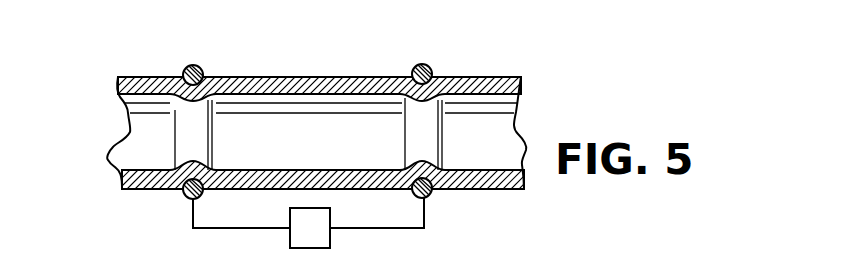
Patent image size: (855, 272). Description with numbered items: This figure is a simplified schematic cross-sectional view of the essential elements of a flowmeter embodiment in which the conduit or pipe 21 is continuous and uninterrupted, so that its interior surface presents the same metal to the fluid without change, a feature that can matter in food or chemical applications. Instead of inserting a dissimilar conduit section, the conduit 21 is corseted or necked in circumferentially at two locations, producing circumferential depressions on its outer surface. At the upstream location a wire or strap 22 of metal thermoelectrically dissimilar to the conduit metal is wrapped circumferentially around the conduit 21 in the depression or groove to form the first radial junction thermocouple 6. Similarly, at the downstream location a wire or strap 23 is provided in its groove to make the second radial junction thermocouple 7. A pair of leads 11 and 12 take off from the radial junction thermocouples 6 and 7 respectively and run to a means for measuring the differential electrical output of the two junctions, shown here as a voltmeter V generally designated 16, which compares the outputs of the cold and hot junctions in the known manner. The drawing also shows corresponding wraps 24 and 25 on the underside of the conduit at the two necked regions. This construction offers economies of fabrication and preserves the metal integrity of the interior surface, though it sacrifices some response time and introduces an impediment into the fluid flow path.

The conduit 21 is at (133, 77).
The first radial junction thermocouple 6 is at (180, 74).
The wire or strap 22 is at (203, 66).
The second radial junction thermocouple 7 is at (410, 73).
The wire or strap 23 is at (434, 67).
The third electrode 24 is at (184, 195).
The fourth electrode 25 is at (436, 190).
The lead 11 is at (192, 219).
The lead 12 is at (426, 213).
The voltmeter 16 is at (306, 250).